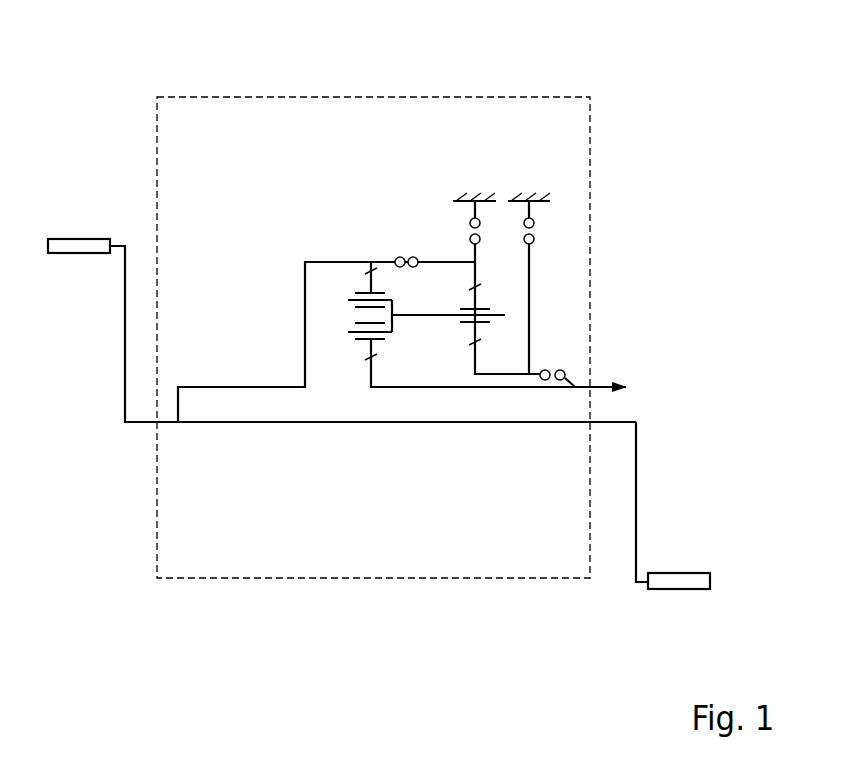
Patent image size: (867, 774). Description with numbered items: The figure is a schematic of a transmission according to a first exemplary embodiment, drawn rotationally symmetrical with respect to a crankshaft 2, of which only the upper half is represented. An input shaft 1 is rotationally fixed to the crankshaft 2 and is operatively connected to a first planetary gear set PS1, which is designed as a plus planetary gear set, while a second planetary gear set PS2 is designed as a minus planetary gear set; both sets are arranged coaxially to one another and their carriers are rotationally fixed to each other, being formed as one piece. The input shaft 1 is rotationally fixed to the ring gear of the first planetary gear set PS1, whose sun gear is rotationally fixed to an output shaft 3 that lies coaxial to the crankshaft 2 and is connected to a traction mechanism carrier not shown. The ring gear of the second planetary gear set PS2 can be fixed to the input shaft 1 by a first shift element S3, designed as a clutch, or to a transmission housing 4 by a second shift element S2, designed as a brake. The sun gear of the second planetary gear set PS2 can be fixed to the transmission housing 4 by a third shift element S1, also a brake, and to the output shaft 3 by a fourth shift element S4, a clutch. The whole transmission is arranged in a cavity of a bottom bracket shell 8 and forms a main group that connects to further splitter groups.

The input shaft 1 is at (242, 387).
The crankshaft 2 is at (613, 422).
The output shaft 3 is at (409, 387).
The transmission housing 4 is at (474, 192).
The bottom bracket shell 8 is at (305, 578).
The first planetary gear set PS1 is at (371, 427).
The second planetary gear set PS2 is at (475, 427).
The third shift element S1 is at (540, 232).
The second shift element S2 is at (465, 235).
The first shift element S3 is at (406, 256).
The fourth shift element S4 is at (560, 368).